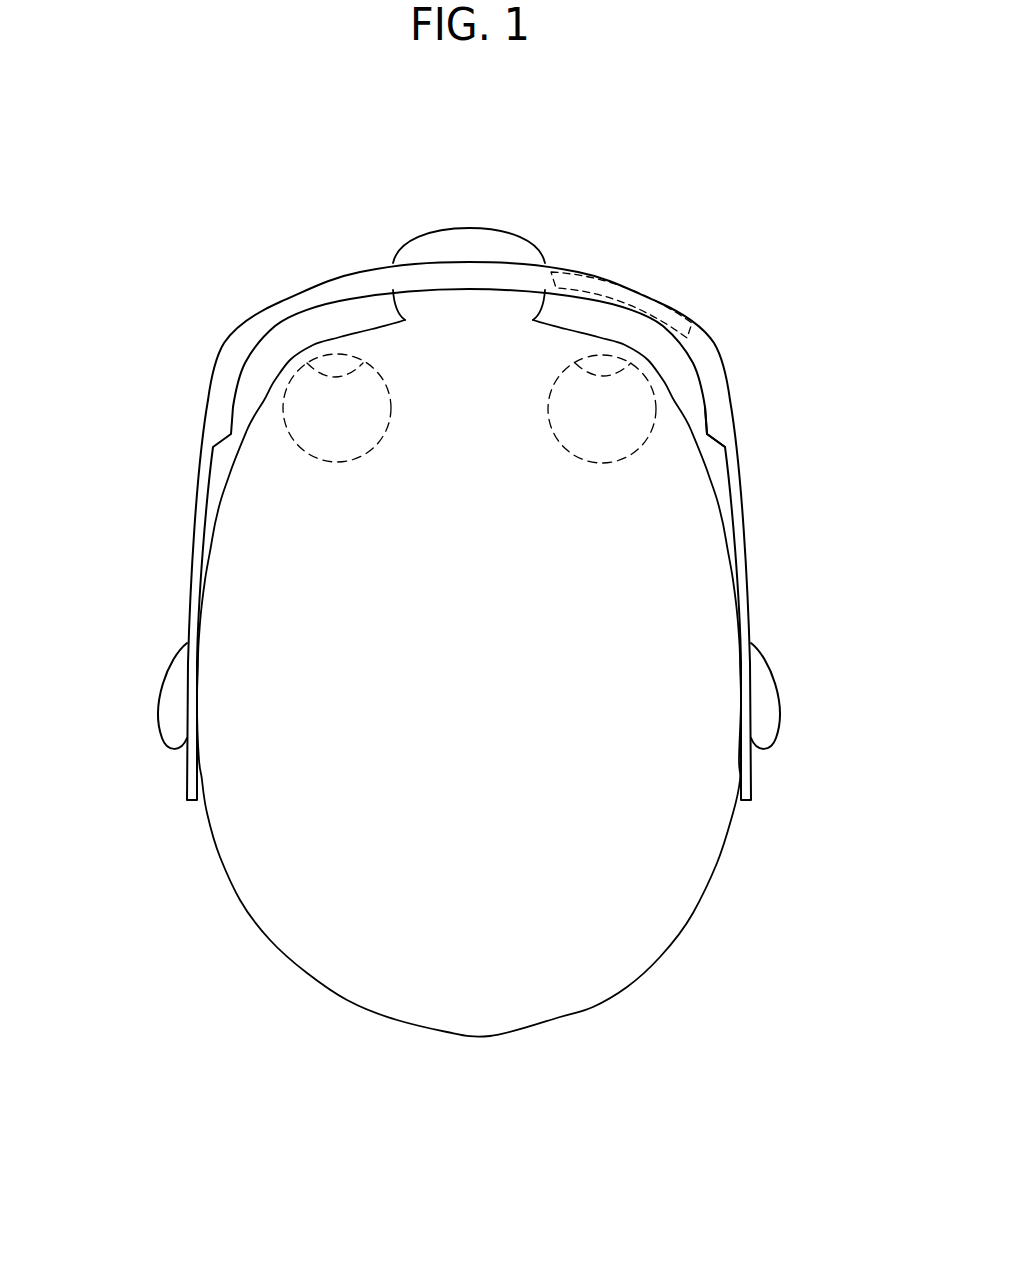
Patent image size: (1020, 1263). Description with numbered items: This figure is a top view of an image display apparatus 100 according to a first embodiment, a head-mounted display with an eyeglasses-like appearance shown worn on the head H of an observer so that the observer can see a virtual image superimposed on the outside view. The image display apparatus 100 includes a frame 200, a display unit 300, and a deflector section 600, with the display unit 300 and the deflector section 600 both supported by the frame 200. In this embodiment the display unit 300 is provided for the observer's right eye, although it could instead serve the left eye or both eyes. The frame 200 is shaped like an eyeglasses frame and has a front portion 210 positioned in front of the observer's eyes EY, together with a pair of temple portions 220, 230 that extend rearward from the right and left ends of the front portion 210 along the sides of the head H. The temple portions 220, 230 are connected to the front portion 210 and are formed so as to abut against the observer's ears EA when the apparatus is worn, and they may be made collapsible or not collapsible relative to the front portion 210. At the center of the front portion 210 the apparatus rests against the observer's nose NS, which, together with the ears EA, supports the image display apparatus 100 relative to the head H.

The image display apparatus 100 is at (471, 486).
The frame 200 is at (471, 486).
The front portion 210 is at (577, 284).
The temple portion 220 is at (745, 477).
The temple portion 230 is at (195, 478).
The display unit 300 is at (722, 422).
The deflector section 600 is at (643, 294).
The head H is at (593, 968).
The nose NS is at (472, 244).
The eyes EY is at (303, 403).
The ears EA is at (175, 705).